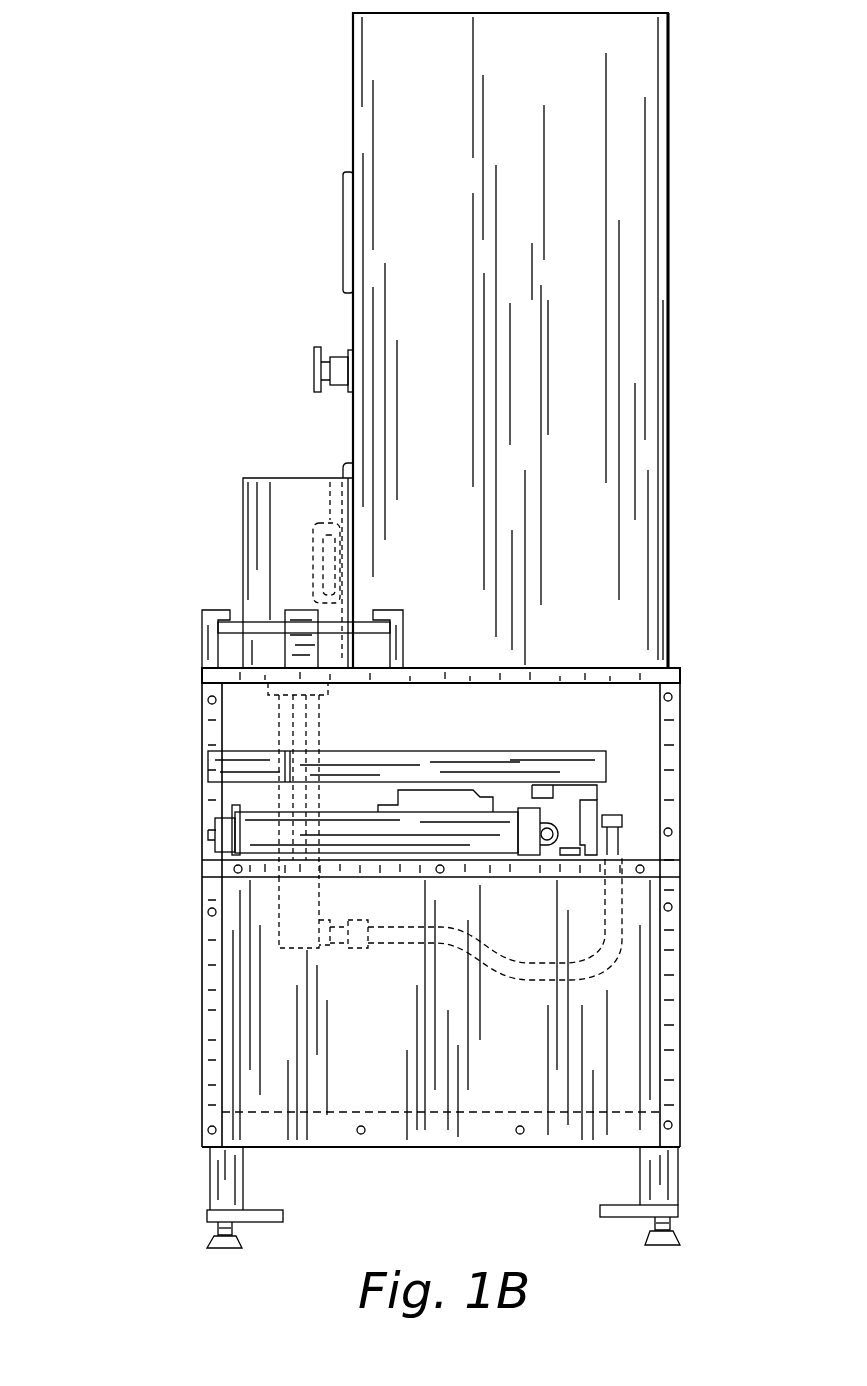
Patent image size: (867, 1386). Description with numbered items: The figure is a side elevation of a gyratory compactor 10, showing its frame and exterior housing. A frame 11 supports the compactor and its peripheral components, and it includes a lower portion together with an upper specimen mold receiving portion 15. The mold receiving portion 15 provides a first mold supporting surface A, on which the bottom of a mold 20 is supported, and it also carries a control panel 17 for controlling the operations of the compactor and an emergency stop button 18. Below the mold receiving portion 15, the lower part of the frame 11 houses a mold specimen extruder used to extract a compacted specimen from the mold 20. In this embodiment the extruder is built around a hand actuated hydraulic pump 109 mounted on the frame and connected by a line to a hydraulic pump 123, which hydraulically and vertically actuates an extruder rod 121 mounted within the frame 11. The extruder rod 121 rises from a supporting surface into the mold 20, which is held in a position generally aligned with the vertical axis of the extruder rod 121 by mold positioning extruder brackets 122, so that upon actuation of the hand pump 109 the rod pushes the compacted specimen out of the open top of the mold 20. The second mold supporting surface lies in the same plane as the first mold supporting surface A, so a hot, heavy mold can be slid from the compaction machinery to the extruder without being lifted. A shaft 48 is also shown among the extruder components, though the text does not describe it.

The gyratory compactor 10 is at (160, 157).
The frame 11 is at (205, 1035).
The upper specimen mold receiving portion 15 is at (673, 240).
The control panel 17 is at (344, 237).
The emergency stop button 18 is at (312, 370).
The mold 20 is at (297, 478).
The shaft 48 is at (265, 628).
The hand actuated hydraulic pump 109 is at (368, 828).
The extruder rod 121 is at (292, 724).
The mold positioning extruder brackets 122 is at (202, 645).
The hydraulic pump 123 is at (280, 908).
The first mold supporting surface A is at (545, 668).